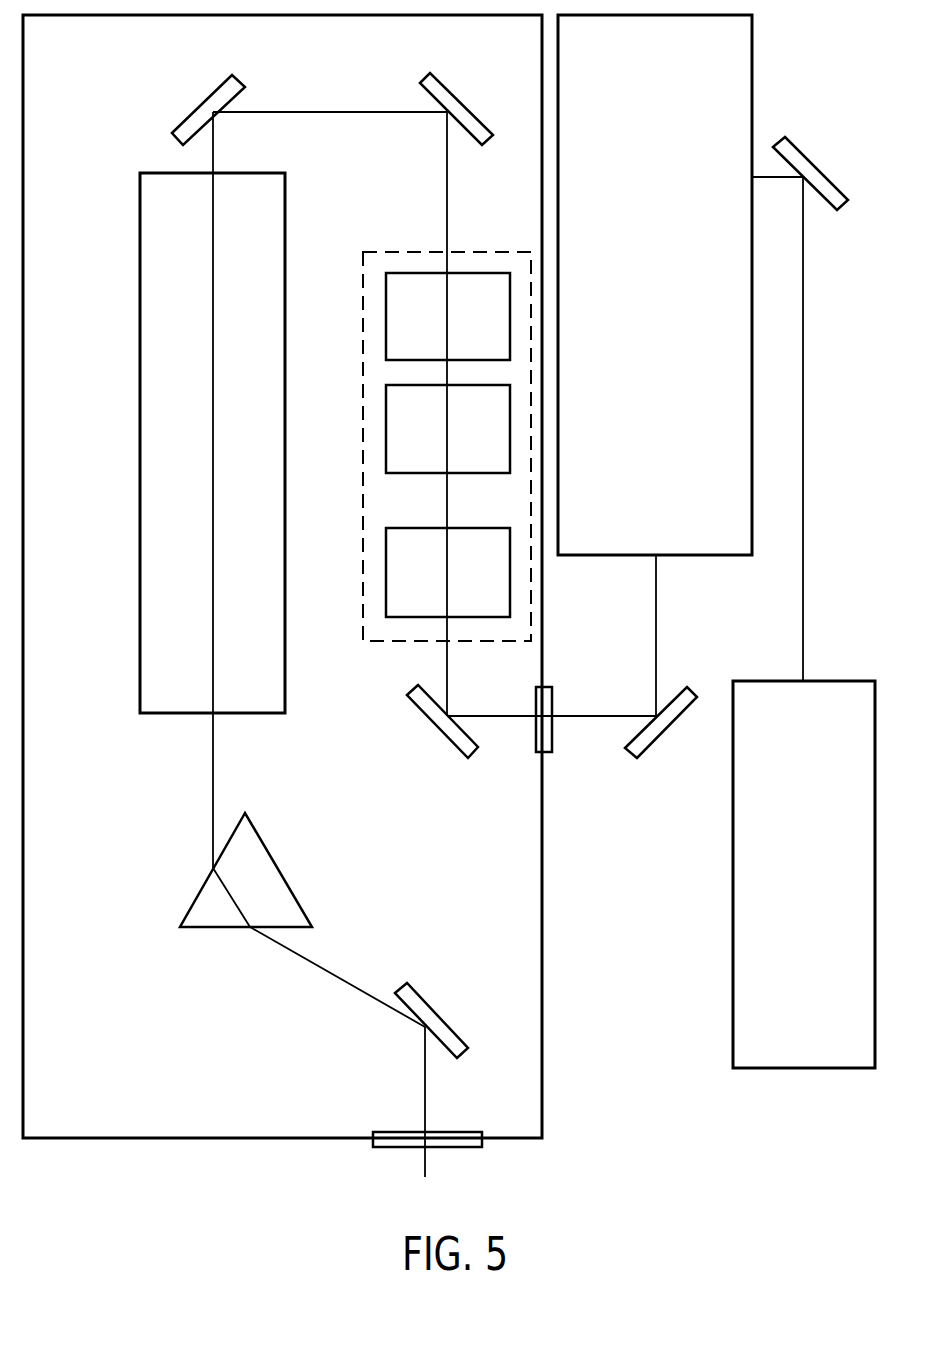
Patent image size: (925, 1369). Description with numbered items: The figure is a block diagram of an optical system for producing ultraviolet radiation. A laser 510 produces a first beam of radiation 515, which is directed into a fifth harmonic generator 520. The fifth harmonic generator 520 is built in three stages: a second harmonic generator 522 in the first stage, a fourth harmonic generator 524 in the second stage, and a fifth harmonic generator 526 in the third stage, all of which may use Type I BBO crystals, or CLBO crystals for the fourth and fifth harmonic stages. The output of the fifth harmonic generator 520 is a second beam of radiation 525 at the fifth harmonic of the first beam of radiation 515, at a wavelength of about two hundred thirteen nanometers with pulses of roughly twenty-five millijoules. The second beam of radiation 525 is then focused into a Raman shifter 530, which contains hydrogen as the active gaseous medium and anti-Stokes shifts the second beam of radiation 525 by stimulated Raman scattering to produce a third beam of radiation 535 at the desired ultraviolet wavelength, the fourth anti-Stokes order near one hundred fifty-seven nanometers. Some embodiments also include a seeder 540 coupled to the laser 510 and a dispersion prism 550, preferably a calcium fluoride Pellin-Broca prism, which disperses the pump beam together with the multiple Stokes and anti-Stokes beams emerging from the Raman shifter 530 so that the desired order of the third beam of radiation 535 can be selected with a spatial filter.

The laser 510 is at (633, 165).
The first beam of radiation 515 is at (656, 606).
The fifth harmonic generator 520 is at (400, 250).
The second harmonic generator 522 is at (458, 568).
The fourth harmonic generator 524 is at (458, 423).
The second beam of radiation 525 is at (317, 112).
The fifth harmonic generator 526 is at (458, 312).
The Raman shifter 530 is at (140, 372).
The third beam of radiation 535 is at (213, 757).
The seeder 540 is at (783, 820).
The dispersion prism 550 is at (280, 856).